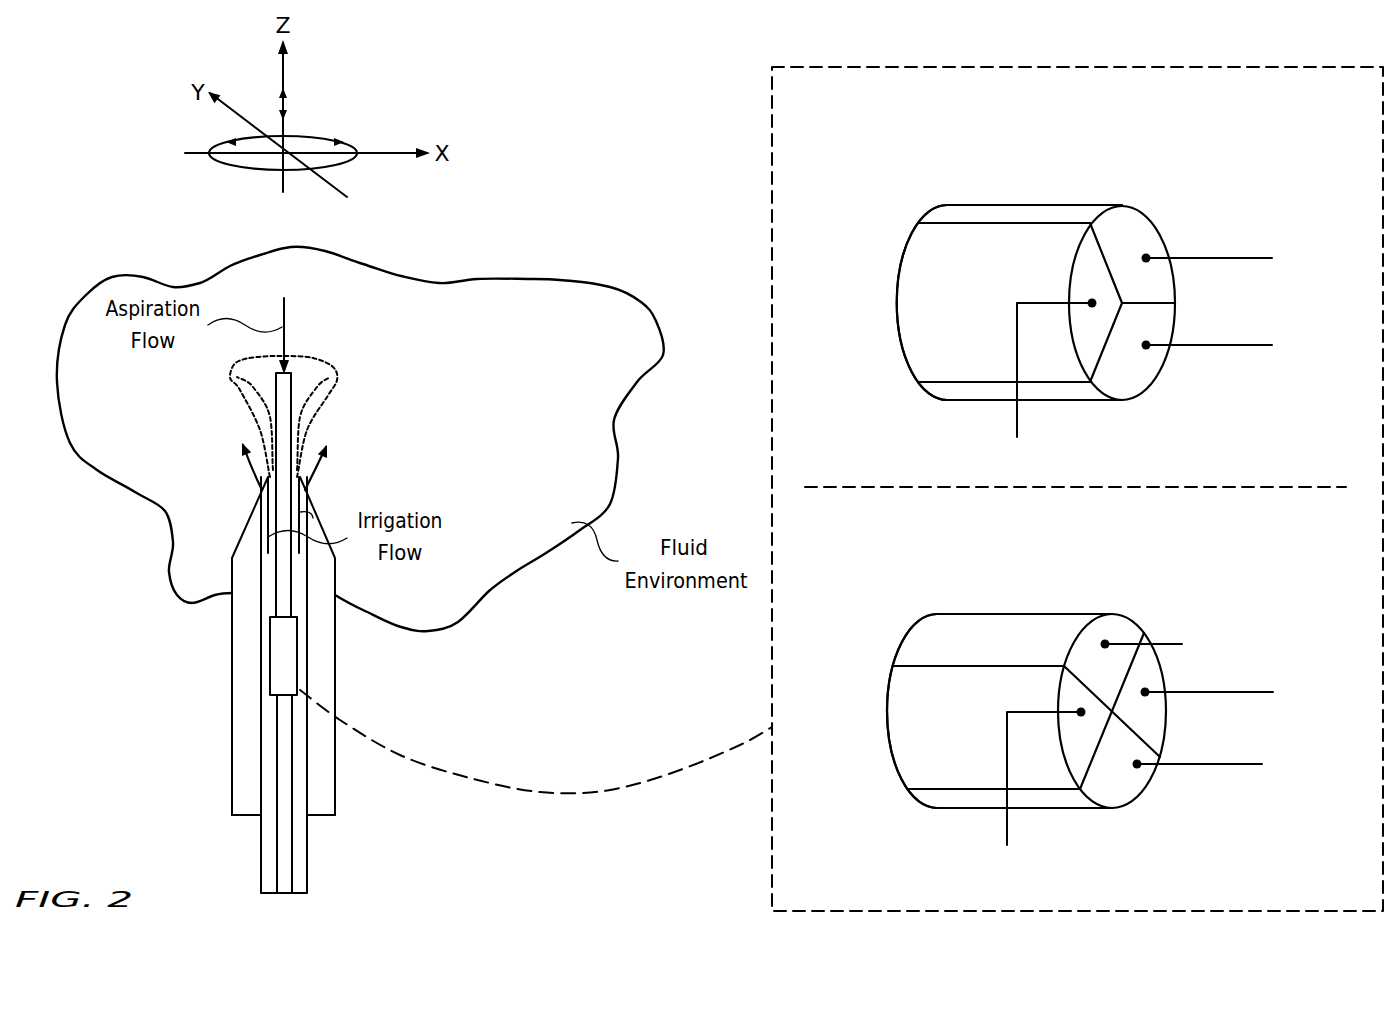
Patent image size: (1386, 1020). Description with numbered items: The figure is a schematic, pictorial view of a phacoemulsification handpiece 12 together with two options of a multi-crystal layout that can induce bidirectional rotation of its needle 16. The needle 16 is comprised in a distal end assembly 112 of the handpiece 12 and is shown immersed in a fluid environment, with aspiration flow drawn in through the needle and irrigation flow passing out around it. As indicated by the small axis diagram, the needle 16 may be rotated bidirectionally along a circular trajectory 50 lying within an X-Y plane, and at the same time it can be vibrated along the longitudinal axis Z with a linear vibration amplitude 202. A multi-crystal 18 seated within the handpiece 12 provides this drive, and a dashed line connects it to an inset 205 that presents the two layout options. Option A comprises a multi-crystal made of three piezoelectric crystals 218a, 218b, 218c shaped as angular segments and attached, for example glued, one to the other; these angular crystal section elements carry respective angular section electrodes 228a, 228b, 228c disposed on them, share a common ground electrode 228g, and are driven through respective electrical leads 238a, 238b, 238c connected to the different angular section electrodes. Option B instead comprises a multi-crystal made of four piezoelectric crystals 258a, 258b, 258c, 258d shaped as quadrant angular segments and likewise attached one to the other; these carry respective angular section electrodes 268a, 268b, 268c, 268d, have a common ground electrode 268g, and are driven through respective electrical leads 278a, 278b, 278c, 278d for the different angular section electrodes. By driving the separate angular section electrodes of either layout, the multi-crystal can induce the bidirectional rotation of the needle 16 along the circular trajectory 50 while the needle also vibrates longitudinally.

The phacoemulsification handpiece 12 is at (359, 796).
The needle 16 is at (287, 427).
The multi-crystal 18 is at (300, 652).
The circular trajectory 50 is at (350, 162).
The distal end assembly 112 is at (211, 489).
The linear vibration amplitude 202 is at (290, 108).
The inset 205 is at (1077, 489).
The piezoelectric crystal 218a is at (1020, 205).
The piezoelectric crystal 218b is at (1065, 400).
The piezoelectric crystal 218c is at (897, 305).
The angular section electrode 228a is at (1148, 215).
The angular section electrode 228b is at (1145, 400).
The angular section electrode 228c is at (1070, 248).
The common ground electrode 228g is at (897, 245).
The electrical lead 238a is at (1246, 256).
The electrical lead 238b is at (1246, 350).
The electrical lead 238c is at (1017, 432).
The piezoelectric crystal 258a is at (1012, 614).
The piezoelectric crystal 258b is at (1160, 664).
The piezoelectric crystal 258c is at (1055, 808).
The piezoelectric crystal 258d is at (888, 710).
The angular section electrode 268a is at (1115, 612).
The angular section electrode 268b is at (1160, 715).
The angular section electrode 268c is at (1137, 808).
The angular section electrode 268d is at (1060, 688).
The common ground electrode 268g is at (888, 648).
The electrical lead 278a is at (1180, 640).
The electrical lead 278b is at (1273, 691).
The electrical lead 278c is at (1240, 766).
The electrical lead 278d is at (1007, 840).